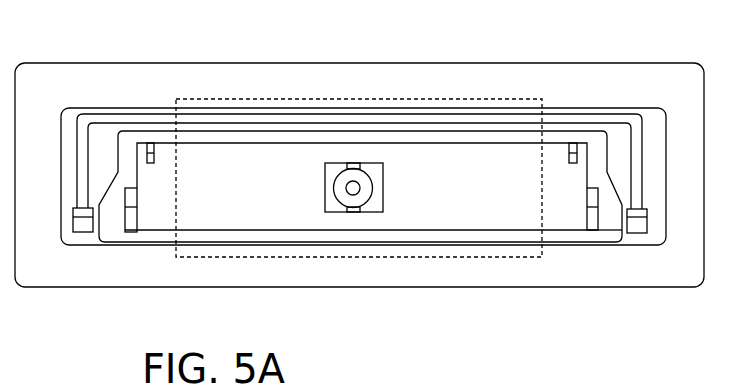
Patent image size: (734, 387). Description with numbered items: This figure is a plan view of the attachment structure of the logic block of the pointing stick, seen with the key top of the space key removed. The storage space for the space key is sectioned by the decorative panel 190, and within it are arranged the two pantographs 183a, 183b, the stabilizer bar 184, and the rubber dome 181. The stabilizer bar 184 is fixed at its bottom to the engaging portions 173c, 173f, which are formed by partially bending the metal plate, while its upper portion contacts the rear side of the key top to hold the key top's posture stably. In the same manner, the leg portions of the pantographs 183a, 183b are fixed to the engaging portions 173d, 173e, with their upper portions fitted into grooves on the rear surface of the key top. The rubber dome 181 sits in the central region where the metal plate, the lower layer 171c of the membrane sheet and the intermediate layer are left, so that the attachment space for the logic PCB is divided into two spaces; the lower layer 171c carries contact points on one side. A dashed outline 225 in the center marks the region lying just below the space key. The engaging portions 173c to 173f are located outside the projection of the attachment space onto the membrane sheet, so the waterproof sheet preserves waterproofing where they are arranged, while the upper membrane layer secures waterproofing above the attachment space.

The decorative panel 190 is at (664, 85).
The display area 225 is at (297, 258).
The stabilizer bar 184 is at (579, 120).
The pantograph 183a is at (217, 165).
The pantograph 183b is at (438, 137).
The engaging portion 173c is at (85, 235).
The engaging portion 173d is at (130, 222).
The engaging portion 173e is at (592, 223).
The engaging portion 173f is at (637, 228).
The rubber dome 181 is at (365, 190).
The lower layer 171c is at (350, 169).